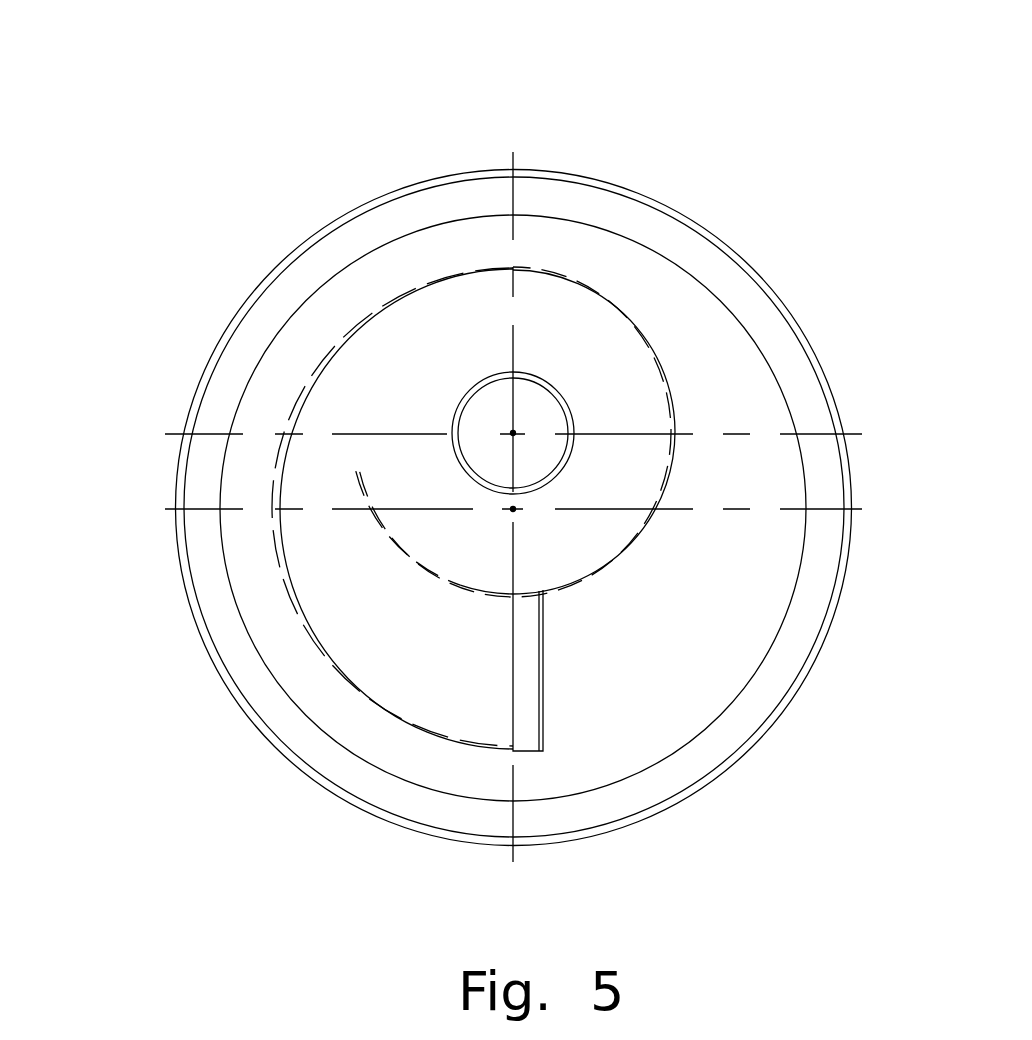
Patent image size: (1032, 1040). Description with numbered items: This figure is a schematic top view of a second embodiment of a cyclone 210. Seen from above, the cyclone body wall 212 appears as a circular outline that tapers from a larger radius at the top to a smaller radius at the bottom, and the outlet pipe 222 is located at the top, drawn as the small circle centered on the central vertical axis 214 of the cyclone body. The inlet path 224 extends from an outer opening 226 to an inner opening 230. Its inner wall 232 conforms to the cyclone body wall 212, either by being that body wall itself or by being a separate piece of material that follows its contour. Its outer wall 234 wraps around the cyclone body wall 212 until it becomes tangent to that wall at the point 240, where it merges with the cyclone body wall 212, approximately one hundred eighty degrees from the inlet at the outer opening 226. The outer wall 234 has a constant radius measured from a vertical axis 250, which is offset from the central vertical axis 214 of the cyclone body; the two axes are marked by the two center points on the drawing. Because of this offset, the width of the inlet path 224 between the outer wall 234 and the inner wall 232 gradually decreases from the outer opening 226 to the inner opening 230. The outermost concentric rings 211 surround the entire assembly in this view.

The cyclone 210 is at (520, 467).
The outer flange of housing 211 is at (437, 508).
The cyclone body wall 212 is at (690, 406).
The central vertical axis 214 is at (575, 394).
The outlet pipe 222 is at (407, 274).
The inlet path 224 is at (384, 572).
The outer opening 226 is at (603, 670).
The inner opening 230 is at (300, 389).
The inner wall 232 is at (385, 498).
The outer wall 234 is at (355, 526).
The point 240 is at (584, 463).
The vertical axis 250 is at (513, 531).